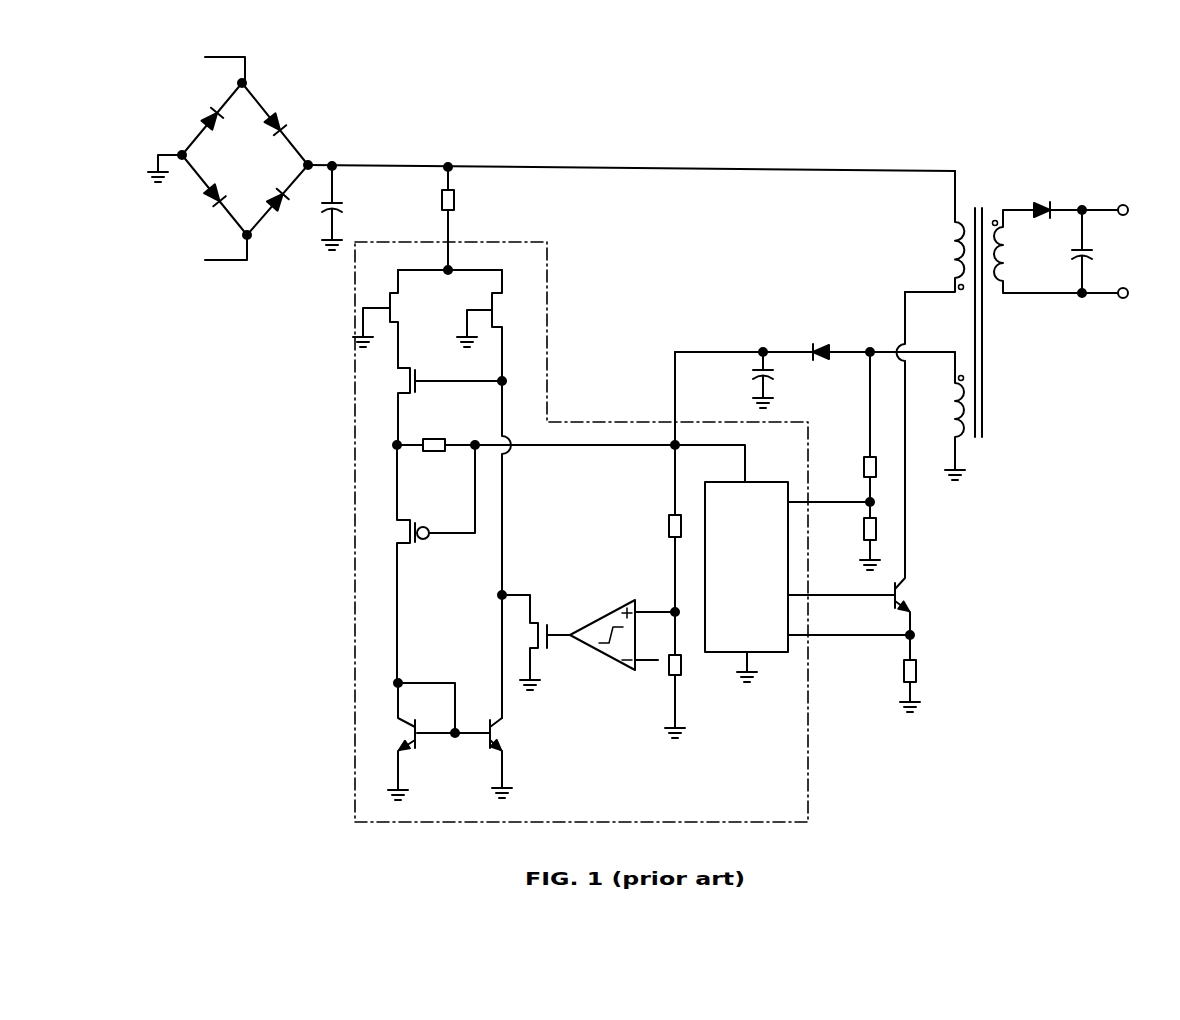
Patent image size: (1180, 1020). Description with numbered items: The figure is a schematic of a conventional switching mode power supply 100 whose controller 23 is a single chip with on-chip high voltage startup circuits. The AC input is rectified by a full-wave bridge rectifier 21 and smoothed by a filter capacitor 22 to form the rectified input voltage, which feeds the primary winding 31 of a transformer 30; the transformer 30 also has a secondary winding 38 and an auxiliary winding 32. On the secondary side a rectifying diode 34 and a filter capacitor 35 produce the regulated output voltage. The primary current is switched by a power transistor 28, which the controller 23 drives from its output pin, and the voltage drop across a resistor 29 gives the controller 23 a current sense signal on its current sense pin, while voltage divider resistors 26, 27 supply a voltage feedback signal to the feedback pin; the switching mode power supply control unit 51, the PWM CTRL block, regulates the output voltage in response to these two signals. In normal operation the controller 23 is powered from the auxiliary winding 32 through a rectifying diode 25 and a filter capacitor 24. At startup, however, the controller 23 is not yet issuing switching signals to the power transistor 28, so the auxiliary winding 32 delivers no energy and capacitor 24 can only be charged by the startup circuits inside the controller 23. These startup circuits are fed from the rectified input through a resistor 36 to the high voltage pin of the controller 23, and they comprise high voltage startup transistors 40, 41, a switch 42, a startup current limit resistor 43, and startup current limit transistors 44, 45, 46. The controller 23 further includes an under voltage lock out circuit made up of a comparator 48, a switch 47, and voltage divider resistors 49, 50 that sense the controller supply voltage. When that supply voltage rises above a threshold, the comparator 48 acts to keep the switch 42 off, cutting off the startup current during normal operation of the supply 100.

The switching mode power supply 100 is at (678, 132).
The full-wave bridge rectifier 21 is at (233, 164).
The filter capacitor 22 is at (322, 213).
The controller 23 is at (557, 418).
The filter capacitor 24 is at (775, 377).
The rectifying diode 25 is at (826, 340).
The voltage divider resistor 26 is at (883, 468).
The voltage divider resistor 27 is at (882, 539).
The power transistor 28 is at (913, 600).
The resistor 29 is at (920, 672).
The transformer 30 is at (980, 197).
The primary winding 31 is at (953, 247).
The auxiliary winding 32 is at (953, 403).
The rectifying diode 34 is at (1042, 195).
The filter capacitor 35 is at (1077, 262).
The high-voltage start-up resistor 36 is at (436, 204).
The secondary winding 38 is at (1007, 247).
The high voltage startup transistor 40 is at (398, 308).
The high voltage startup transistor 41 is at (484, 302).
The switch 42 is at (404, 383).
The startup current limit resistor 43 is at (436, 434).
The startup current limit transistor 44 is at (398, 530).
The startup current limit transistor 45 is at (397, 732).
The startup current limit transistor 46 is at (517, 735).
The switch 47 is at (537, 617).
The comparator 48 is at (592, 603).
The voltage divider resistor 49 is at (665, 530).
The voltage divider resistor 50 is at (685, 667).
The switching mode power supply control unit 51 is at (755, 477).